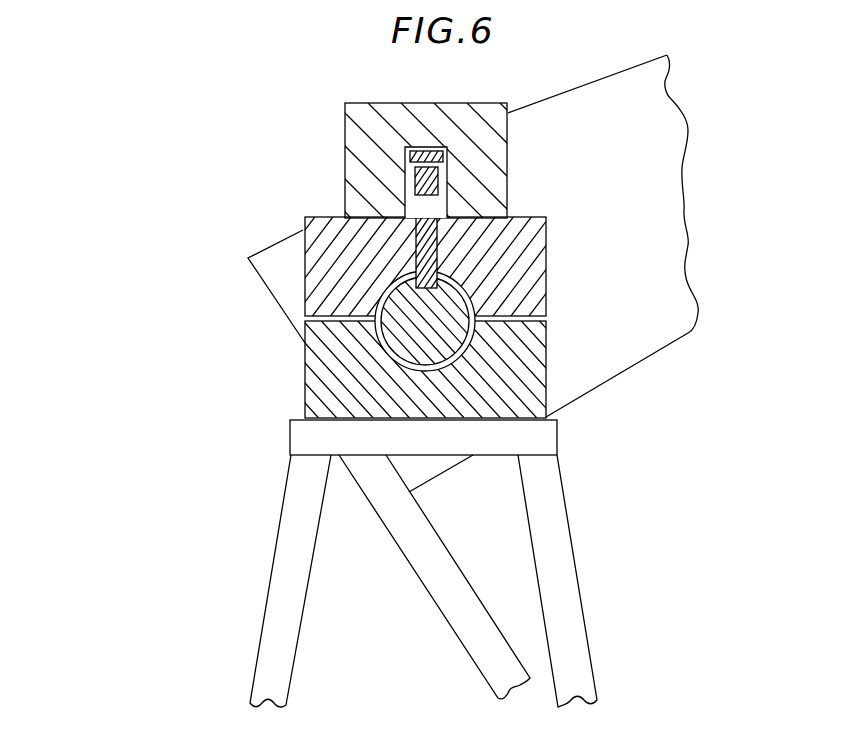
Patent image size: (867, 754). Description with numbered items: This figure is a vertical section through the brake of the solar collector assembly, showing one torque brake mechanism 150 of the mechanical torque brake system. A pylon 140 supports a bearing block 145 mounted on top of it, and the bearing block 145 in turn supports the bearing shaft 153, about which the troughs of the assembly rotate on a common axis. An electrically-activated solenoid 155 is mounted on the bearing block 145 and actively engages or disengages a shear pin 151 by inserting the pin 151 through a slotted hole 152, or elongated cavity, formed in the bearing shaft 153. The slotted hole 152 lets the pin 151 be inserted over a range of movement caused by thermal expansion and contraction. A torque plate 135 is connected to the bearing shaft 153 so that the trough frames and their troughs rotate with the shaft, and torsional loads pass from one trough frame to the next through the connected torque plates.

The torque brake mechanism 150 is at (185, 125).
The electrically-activated solenoid 155 is at (345, 122).
The shear pin 151 is at (417, 235).
The slotted hole 152 is at (445, 289).
The bearing shaft 153 is at (472, 308).
The bearing block 145 is at (303, 372).
The torque plate 135 is at (688, 333).
The pylon 140 is at (573, 550).